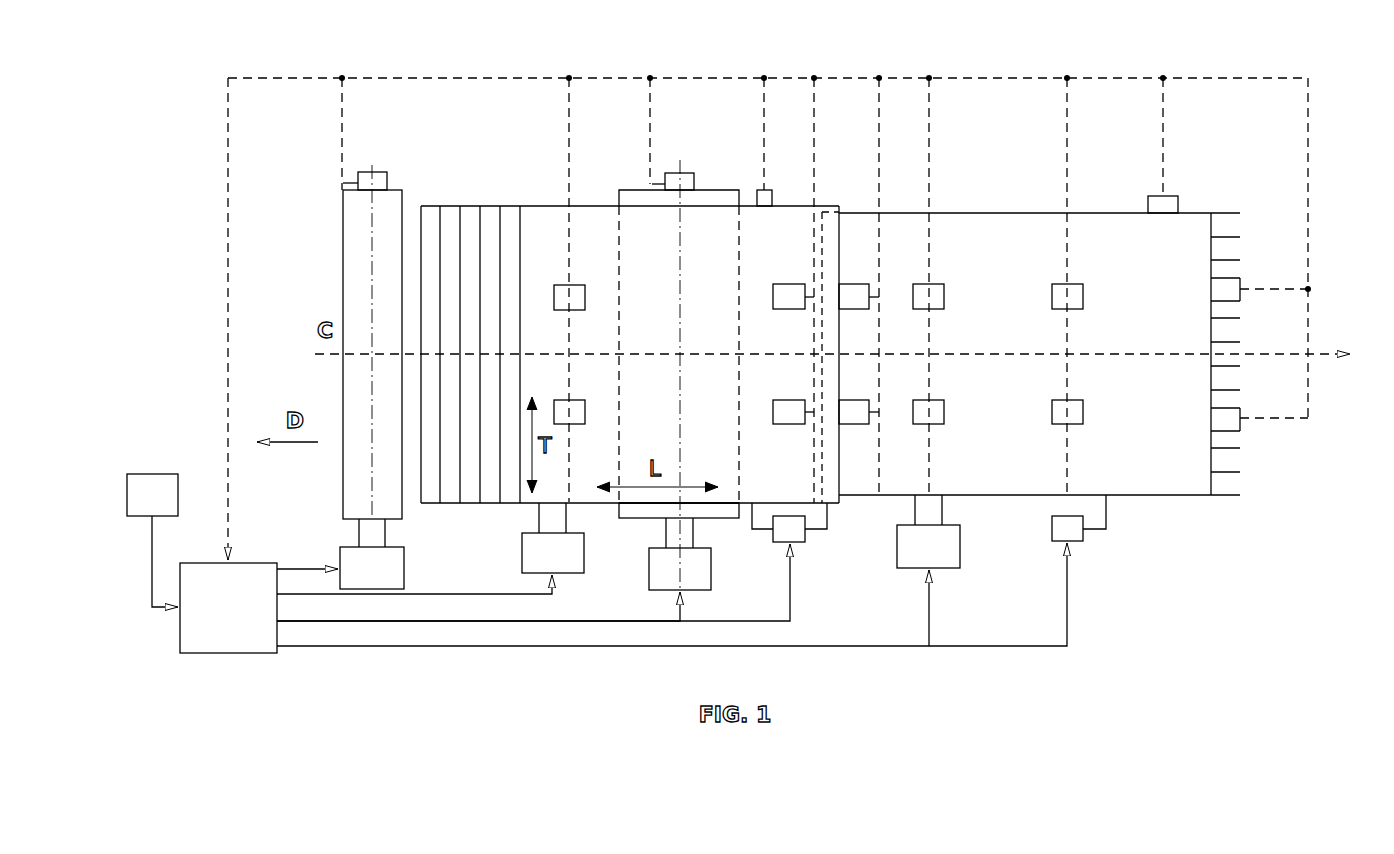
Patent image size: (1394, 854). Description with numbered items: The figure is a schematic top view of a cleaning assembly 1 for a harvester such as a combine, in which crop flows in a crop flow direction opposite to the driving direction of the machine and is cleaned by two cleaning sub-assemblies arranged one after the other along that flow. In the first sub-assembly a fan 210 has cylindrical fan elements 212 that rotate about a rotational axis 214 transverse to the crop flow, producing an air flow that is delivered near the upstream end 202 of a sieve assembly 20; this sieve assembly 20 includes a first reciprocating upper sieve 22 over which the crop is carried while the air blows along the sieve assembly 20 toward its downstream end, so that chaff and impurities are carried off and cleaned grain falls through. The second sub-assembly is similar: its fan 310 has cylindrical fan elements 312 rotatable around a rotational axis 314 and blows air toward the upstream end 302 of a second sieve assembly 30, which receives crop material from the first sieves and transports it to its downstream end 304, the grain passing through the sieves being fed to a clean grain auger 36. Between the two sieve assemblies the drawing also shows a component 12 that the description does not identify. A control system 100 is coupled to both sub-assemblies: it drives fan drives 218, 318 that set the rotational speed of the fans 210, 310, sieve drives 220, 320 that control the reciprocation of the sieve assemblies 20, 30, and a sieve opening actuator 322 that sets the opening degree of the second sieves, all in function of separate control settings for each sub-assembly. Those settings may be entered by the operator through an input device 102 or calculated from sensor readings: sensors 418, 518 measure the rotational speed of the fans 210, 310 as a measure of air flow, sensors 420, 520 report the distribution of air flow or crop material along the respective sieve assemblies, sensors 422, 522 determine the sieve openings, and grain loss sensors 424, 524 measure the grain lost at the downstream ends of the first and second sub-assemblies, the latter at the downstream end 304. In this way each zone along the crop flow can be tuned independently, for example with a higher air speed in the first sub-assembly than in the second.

The cleaning assembly 1 is at (158, 155).
The die 12 is at (720, 515).
The sieve assembly 20 is at (557, 205).
The first reciprocating upper sieve 22 is at (536, 215).
The sieve assembly 30 is at (1002, 205).
The clean grain auger 36 is at (840, 222).
The control system 100 is at (250, 572).
The input device 102 is at (158, 480).
The upstream end 202 is at (417, 293).
The fan 210 is at (355, 367).
The cylindrical fan elements 212 is at (351, 243).
The rotational axis 214 is at (366, 168).
The fan drive 218 is at (400, 567).
The sieve drive 220 is at (570, 570).
The upstream end 302 is at (822, 245).
The downstream end 304 is at (1228, 270).
The fan 310 is at (644, 523).
The cylindrical fan elements 312 is at (800, 538).
The rotational axis 314 is at (676, 300).
The fan drive 318 is at (705, 576).
The sieve drive 320 is at (955, 556).
The sieve opening actuator 322 is at (1075, 530).
The fan speed sensor 418 is at (383, 180).
The distribution sensors 420 is at (562, 285).
The sieve opening sensor 422 is at (780, 194).
The grain loss sensor 424 is at (862, 290).
The fan speed sensor 518 is at (683, 182).
The distribution sensors 520 is at (937, 300).
The sieve opening sensor 522 is at (1152, 202).
The grain loss sensor 524 is at (1230, 292).